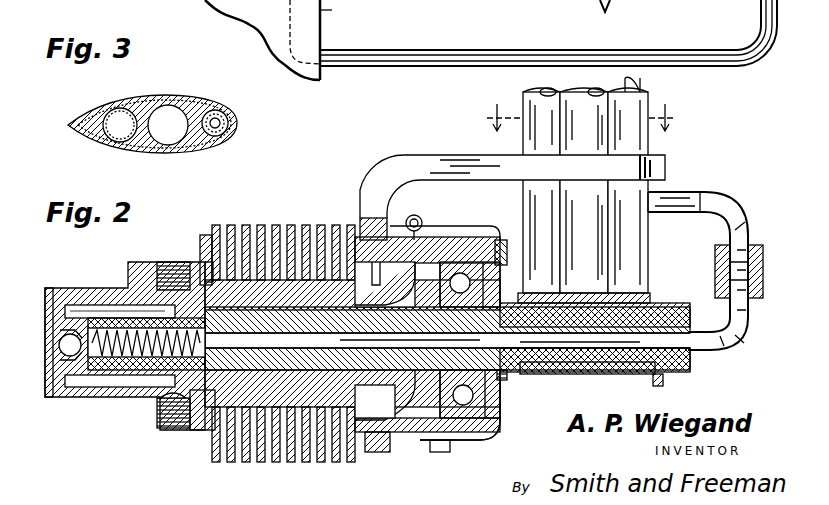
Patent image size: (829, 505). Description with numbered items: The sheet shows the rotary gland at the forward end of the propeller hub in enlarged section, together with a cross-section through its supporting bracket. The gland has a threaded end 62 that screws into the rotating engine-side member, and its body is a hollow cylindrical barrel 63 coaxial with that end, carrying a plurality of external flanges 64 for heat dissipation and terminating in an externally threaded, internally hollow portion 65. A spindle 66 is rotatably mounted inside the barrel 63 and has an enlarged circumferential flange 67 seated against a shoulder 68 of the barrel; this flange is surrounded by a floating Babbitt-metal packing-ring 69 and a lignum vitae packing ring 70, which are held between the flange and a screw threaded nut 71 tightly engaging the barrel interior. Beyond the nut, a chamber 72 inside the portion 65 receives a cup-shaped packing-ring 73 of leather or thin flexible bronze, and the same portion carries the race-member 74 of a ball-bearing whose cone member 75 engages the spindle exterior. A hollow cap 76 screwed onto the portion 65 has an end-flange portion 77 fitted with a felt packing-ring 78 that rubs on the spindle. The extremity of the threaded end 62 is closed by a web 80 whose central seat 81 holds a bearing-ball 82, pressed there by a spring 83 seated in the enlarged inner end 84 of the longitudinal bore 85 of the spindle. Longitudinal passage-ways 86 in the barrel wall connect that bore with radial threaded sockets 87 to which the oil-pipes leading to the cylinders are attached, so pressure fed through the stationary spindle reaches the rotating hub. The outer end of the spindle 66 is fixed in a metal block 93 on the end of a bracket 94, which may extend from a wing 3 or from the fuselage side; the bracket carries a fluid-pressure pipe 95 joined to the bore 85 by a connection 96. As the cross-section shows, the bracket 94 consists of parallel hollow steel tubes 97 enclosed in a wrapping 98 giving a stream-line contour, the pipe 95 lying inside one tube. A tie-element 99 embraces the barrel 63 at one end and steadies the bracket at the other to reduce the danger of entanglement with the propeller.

In FIG. 2, the wing 3 is at (496, 66).
In FIG. 2, the threaded end 62 is at (78, 290).
In FIG. 2, the hollow cylindrical barrel 63 is at (252, 287).
In FIG. 2, the external flanges 64 is at (280, 240).
In FIG. 2, the externally threaded hollow portion 65 is at (472, 446).
In FIG. 2, the spindle 66 is at (380, 305).
In FIG. 2, the circumferential flange 67 is at (215, 396).
In FIG. 2, the shoulder 68 is at (210, 280).
In FIG. 2, the Babbitt-metal packing-ring 69 is at (215, 392).
In FIG. 2, the lignum vitae packing ring 70 is at (248, 392).
In FIG. 2, the screw threaded nut 71 is at (375, 273).
In FIG. 2, the chamber 72 is at (396, 416).
In FIG. 2, the cup-shaped packing-ring 73 is at (385, 395).
In FIG. 2, the race-member 74 is at (500, 424).
In FIG. 2, the cone member 75 is at (493, 292).
In FIG. 2, the hollow cap 76 is at (440, 454).
In FIG. 2, the end-flange portion 77 is at (506, 404).
In FIG. 2, the felt packing-ring 78 is at (518, 384).
In FIG. 2, the web 80 is at (48, 400).
In FIG. 2, the seat 81 is at (58, 345).
In FIG. 2, the bearing-ball 82 is at (60, 332).
In FIG. 2, the spring 83 is at (96, 366).
In FIG. 2, the enlarged inner end 84 is at (126, 358).
In FIG. 2, the longitudinal bore 85 is at (308, 348).
In FIG. 2, the longitudinal passage-ways 86 is at (108, 307).
In FIG. 2, the radial threaded sockets 87 is at (168, 262).
In FIG. 2, the metal block 93 is at (595, 376).
In FIG. 3, the bracket 94 is at (165, 95).
In FIG. 3, the fluid-pressure pipe 95 is at (224, 133).
In FIG. 2, the fluid-pressure pipe 95 is at (690, 198).
In FIG. 2, the connection 96 is at (736, 328).
In FIG. 3, the hollow steel tubes 97 is at (208, 90).
In FIG. 2, the hollow steel tubes 97 is at (584, 190).
In FIG. 3, the wrapping 98 is at (140, 100).
In FIG. 2, the tie-element 99 is at (410, 157).